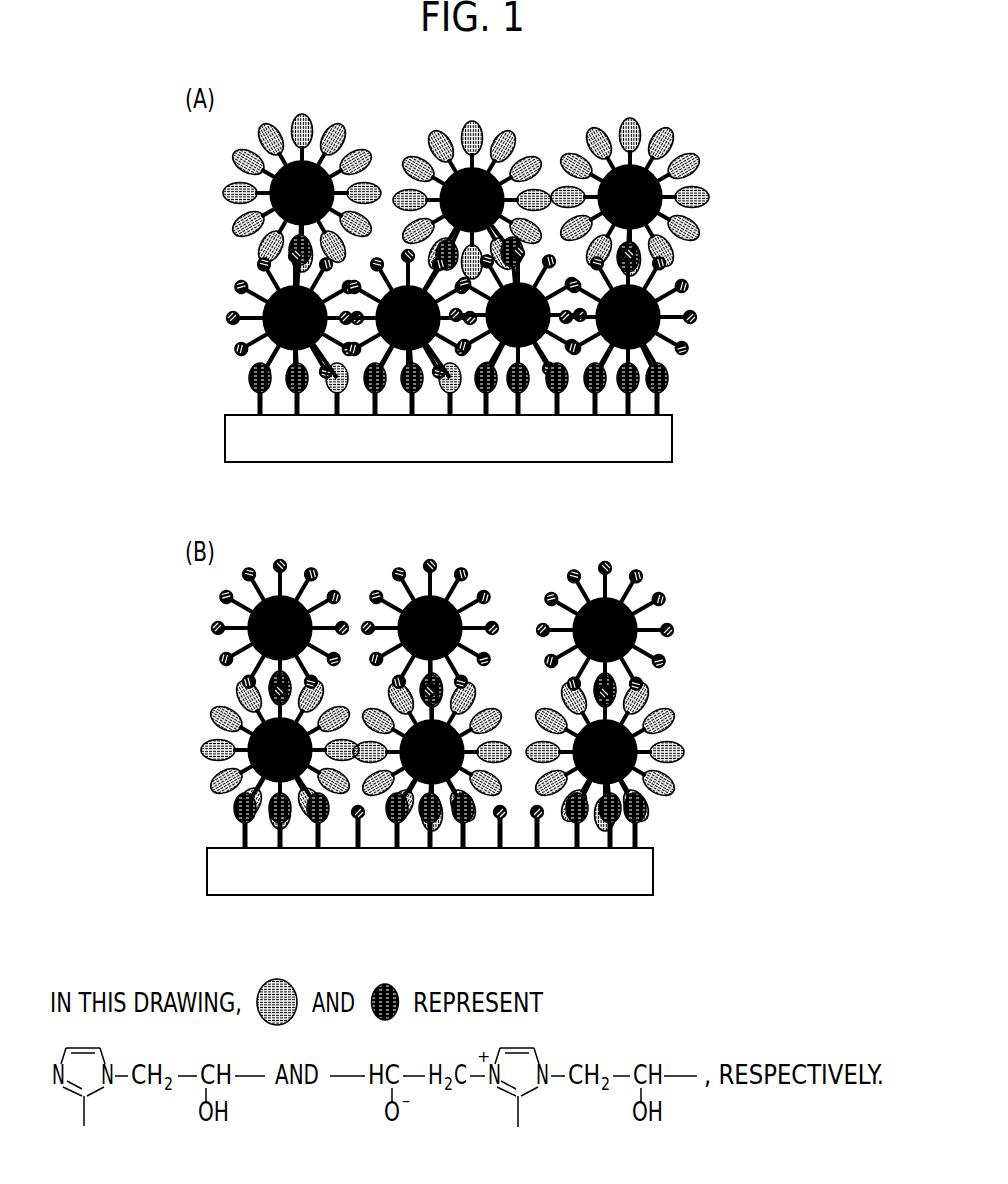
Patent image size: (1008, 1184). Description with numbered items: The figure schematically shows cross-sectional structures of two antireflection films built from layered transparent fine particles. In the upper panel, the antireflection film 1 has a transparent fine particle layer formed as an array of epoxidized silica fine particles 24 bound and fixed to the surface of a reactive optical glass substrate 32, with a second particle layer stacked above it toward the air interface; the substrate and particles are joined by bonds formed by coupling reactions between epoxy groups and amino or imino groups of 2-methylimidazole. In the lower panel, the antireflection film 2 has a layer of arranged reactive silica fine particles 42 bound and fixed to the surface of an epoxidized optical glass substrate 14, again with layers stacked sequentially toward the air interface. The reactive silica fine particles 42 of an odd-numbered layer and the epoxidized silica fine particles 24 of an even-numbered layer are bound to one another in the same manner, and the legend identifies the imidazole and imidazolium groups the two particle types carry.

The antireflection film 1 is at (714, 234).
The antireflection film 2 is at (726, 675).
The epoxidized optical glass substrate 14 is at (677, 848).
The epoxidized silica fine particles 24 is at (687, 303).
The reactive optical glass substrate 32 is at (690, 417).
The reactive silica fine particles 42 is at (700, 133).